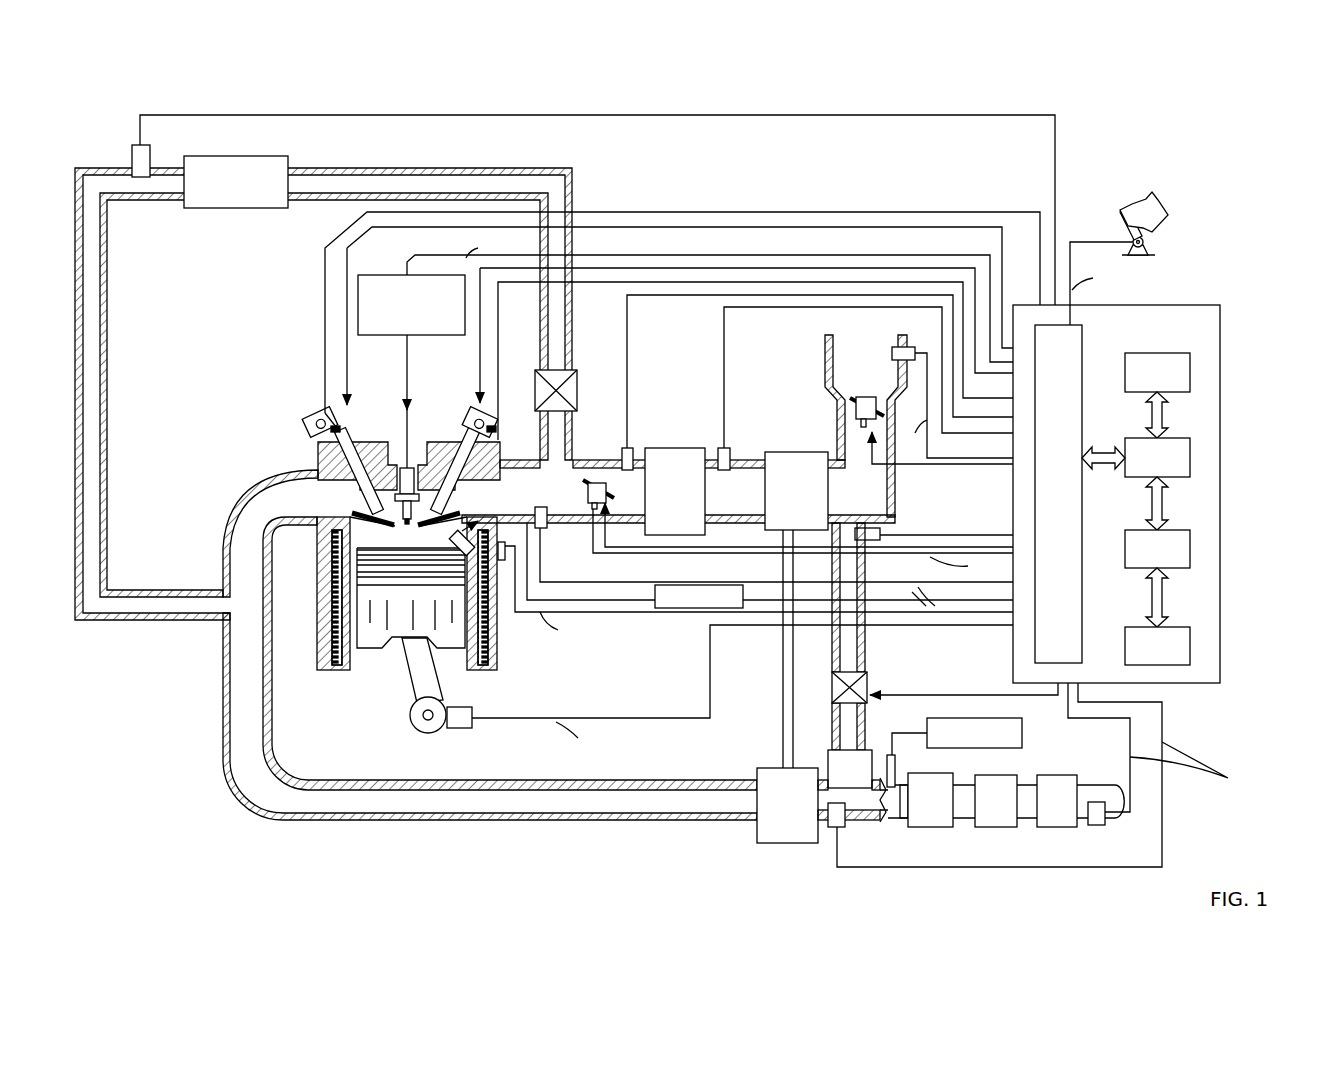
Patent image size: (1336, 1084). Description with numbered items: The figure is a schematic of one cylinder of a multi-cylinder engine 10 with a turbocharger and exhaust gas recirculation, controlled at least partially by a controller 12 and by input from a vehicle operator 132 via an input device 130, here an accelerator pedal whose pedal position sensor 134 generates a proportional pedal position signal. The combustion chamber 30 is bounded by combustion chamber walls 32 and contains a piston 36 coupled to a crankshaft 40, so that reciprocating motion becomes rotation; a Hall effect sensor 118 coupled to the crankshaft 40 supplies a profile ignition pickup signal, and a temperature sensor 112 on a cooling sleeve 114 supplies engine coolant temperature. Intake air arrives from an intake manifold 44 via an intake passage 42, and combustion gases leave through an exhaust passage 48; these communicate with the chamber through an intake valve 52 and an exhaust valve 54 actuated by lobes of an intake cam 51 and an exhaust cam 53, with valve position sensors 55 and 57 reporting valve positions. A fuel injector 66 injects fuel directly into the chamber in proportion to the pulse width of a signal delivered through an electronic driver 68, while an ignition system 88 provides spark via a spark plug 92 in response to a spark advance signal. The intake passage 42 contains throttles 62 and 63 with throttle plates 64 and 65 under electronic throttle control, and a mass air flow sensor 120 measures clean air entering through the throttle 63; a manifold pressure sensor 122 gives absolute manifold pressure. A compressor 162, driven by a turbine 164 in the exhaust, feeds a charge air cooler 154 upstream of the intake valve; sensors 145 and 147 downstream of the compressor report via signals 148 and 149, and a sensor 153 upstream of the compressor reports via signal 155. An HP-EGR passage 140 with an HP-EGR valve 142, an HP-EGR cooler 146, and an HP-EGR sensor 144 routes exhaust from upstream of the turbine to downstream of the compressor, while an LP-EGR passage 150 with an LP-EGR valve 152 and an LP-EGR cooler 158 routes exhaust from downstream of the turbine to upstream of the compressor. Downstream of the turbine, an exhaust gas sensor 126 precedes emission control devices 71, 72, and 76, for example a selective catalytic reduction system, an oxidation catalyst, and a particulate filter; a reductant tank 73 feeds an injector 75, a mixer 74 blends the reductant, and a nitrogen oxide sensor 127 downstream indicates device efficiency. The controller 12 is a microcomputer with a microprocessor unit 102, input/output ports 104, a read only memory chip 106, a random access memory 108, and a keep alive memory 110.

The engine 10 is at (262, 396).
The controller 12 is at (1213, 304).
The combustion chamber 30 is at (388, 560).
The combustion chamber walls 32 is at (345, 675).
The piston 36 is at (395, 652).
The crankshaft 40 is at (415, 730).
The intake passage 42 is at (866, 426).
The intake manifold 44 is at (678, 491).
The exhaust passage 48 is at (490, 645).
The intake cam 51 is at (475, 405).
The intake valve 52 is at (448, 512).
The exhaust cam 53 is at (352, 405).
The exhaust valve 54 is at (358, 513).
The valve position sensor 55 is at (495, 430).
The valve position sensor 57 is at (331, 428).
The throttle 62 is at (588, 480).
The throttle 63 is at (852, 400).
The throttle plate 64 is at (590, 492).
The throttle plate 65 is at (856, 408).
The fuel injector 66 is at (452, 540).
The electronic driver 68 is at (743, 597).
The emission control device 71 is at (930, 800).
The emission control device 72 is at (996, 801).
The reductant tank 73 is at (957, 736).
The mixer 74 is at (903, 825).
The injector 75 is at (896, 768).
The emission control device 76 is at (1057, 801).
The ignition system 88 is at (370, 275).
The spark plug 92 is at (412, 468).
The microprocessor unit 102 is at (1190, 458).
The input/output ports 104 is at (1085, 333).
The read only memory chip 106 is at (1190, 372).
The random access memory 108 is at (1190, 552).
The keep alive memory 110 is at (1190, 648).
The temperature sensor 112 is at (502, 562).
The cooling sleeve 114 is at (488, 640).
The Hall effect sensor 118 is at (462, 730).
The mass air flow sensor 120 is at (898, 347).
The manifold pressure sensor 122 is at (540, 507).
The exhaust gas sensor 126 is at (842, 830).
The NOx sensor 127 is at (1096, 826).
The input device 130 is at (1125, 222).
The vehicle operator 132 is at (1166, 204).
The pedal position sensor 134 is at (1150, 242).
The HP-EGR passage 140 is at (476, 170).
The HP-EGR valve 142 is at (578, 392).
The HP-EGR sensor 144 is at (133, 147).
The sensor 145 is at (726, 448).
The HP-EGR cooler 146 is at (236, 182).
The sensor 147 is at (630, 448).
The signal 148 is at (724, 368).
The signal 149 is at (627, 368).
The LP-EGR passage 150 is at (868, 640).
The LP-EGR valve 152 is at (832, 690).
The sensor 153 is at (862, 528).
The charge air cooler 154 is at (675, 491).
The signal 155 is at (920, 535).
The LP-EGR cooler 158 is at (850, 769).
The compressor 162 is at (796, 610).
The turbine 164 is at (787, 805).